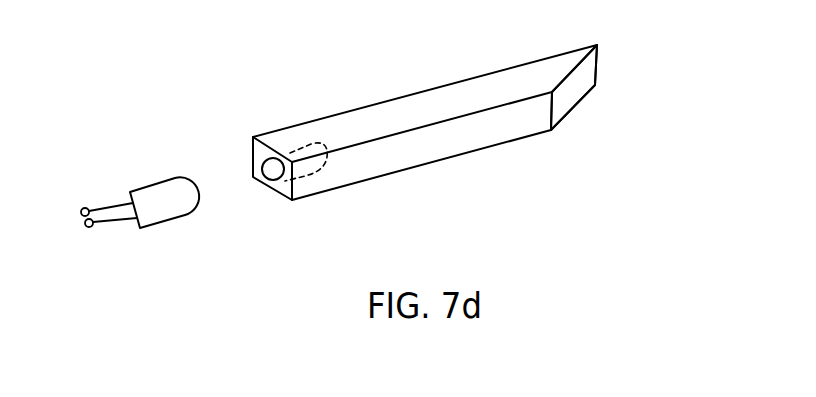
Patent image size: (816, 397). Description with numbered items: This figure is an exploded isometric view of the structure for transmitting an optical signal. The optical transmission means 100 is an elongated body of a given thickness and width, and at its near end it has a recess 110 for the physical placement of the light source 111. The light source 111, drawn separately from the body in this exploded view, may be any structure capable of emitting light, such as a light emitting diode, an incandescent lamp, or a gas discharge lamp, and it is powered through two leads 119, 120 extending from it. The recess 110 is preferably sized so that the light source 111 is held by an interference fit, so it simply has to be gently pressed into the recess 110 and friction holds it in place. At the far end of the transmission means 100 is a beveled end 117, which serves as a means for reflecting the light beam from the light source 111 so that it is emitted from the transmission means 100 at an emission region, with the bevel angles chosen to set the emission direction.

The optical transmission means 100 is at (420, 167).
The recess 110 is at (268, 169).
The light source 111 is at (168, 203).
The beveled end 117 is at (568, 95).
The lead 119 is at (100, 203).
The lead 120 is at (118, 219).